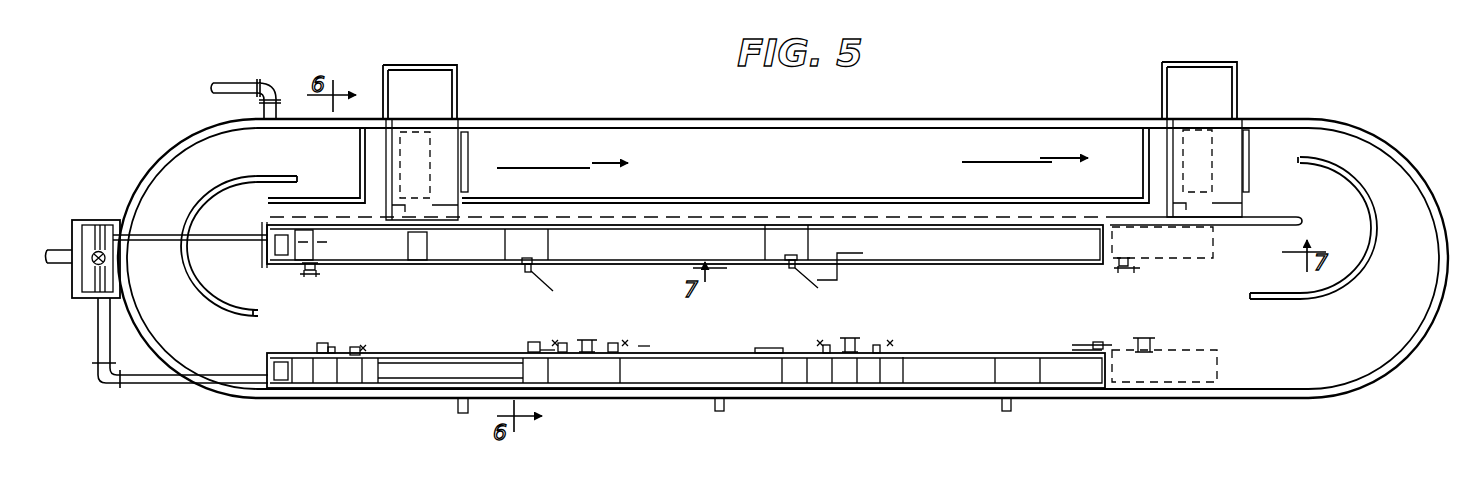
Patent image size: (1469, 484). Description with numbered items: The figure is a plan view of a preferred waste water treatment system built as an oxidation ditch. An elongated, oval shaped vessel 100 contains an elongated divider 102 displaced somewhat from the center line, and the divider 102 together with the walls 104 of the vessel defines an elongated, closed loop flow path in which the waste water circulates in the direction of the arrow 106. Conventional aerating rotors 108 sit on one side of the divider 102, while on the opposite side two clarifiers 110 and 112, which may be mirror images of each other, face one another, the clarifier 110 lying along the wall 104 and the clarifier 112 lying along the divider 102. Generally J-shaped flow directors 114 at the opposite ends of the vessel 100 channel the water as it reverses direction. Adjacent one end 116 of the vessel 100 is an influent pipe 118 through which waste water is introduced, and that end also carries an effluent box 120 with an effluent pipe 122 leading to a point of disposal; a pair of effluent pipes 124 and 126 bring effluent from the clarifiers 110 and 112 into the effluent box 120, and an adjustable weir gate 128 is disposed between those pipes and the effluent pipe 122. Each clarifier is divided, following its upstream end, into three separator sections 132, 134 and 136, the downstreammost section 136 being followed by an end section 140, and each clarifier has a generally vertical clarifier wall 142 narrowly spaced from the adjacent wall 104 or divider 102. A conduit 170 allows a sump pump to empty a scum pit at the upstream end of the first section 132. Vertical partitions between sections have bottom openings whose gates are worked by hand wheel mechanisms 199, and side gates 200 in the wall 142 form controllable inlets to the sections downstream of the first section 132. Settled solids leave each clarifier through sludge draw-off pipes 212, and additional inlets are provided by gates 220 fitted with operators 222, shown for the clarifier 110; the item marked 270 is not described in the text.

The vessel 100 is at (662, 392).
The divider 102 is at (266, 233).
The walls 104 is at (948, 372).
The arrow 106 is at (592, 168).
The aerating rotors 108 is at (420, 160).
The clarifier 110 is at (1044, 351).
The clarifier 112 is at (1084, 266).
The flow directors 114 is at (250, 316).
The end of the vessel 116 is at (185, 133).
The influent pipe 118 is at (283, 100).
The effluent box 120 is at (95, 301).
The effluent pipe 122 is at (58, 248).
The effluent pipe 124 is at (142, 386).
The effluent pipe 126 is at (140, 241).
The adjustable weir gate 128 is at (90, 232).
The separator section 132 is at (1001, 350).
The separator section 134 is at (758, 345).
The separator section 136 is at (357, 290).
The end section 140 is at (318, 345).
The clarifier wall 142 is at (990, 266).
The conduit 170 is at (1197, 344).
The hand wheel mechanism 199 is at (330, 345).
The side gate 200 is at (530, 305).
The sludge draw-off pipes 212 is at (458, 406).
The gates 220 is at (370, 352).
The operator 222 is at (353, 349).
The connector 270 is at (650, 348).